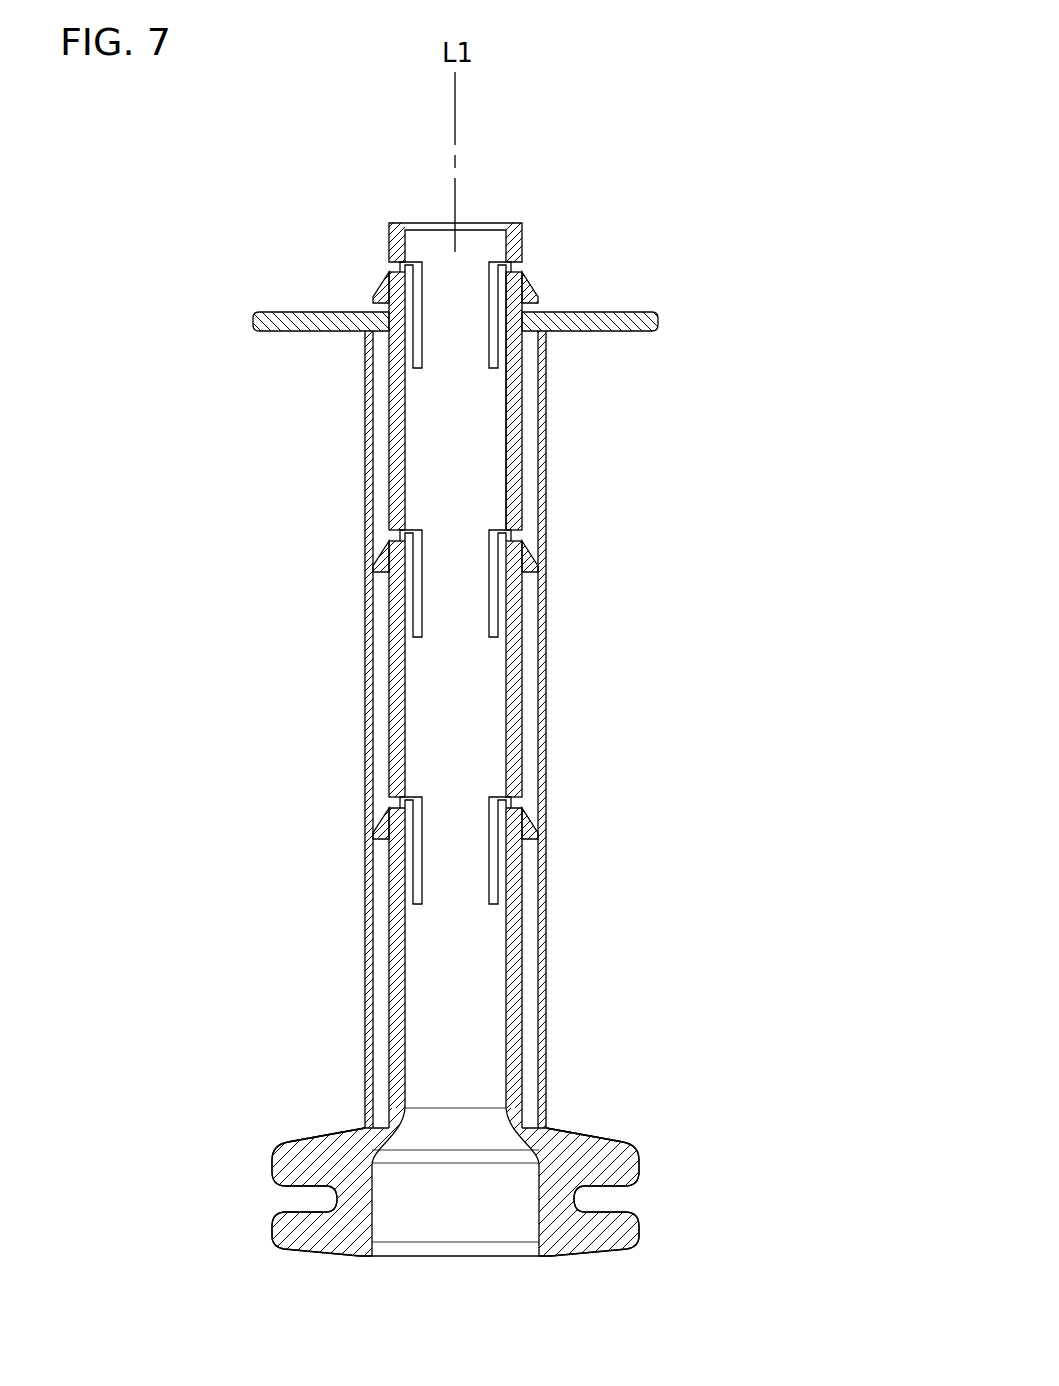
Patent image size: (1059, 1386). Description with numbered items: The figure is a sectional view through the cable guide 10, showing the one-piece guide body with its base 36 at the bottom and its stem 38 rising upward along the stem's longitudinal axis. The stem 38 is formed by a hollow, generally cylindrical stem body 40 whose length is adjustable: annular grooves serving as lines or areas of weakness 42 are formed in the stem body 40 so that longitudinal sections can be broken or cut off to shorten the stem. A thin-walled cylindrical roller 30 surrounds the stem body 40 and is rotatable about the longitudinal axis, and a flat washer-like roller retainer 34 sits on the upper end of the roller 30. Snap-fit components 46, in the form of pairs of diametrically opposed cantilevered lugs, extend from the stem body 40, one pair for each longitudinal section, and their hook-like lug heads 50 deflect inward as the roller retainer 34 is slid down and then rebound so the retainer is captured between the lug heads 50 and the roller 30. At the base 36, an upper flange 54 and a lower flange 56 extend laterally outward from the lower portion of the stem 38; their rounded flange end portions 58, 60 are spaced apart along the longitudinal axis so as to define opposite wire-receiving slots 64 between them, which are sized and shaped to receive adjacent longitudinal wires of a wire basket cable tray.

The cable guide 10 is at (693, 103).
The roller 30 is at (545, 660).
The roller retainer 34 is at (645, 318).
The base 36 is at (640, 1282).
The stem 38 is at (530, 434).
The stem body 40 is at (522, 972).
The lines or areas of weakness 42 is at (518, 490).
The snap-fit component 46 is at (397, 357).
The lug head 50 is at (391, 291).
The upper flange 54 is at (598, 1127).
The lower flange 56 is at (288, 1255).
The flange end portion of upper flange 58 is at (293, 1158).
The flange end portion of lower flange 60 is at (273, 1228).
The wire-receiving slot 64 is at (301, 1202).